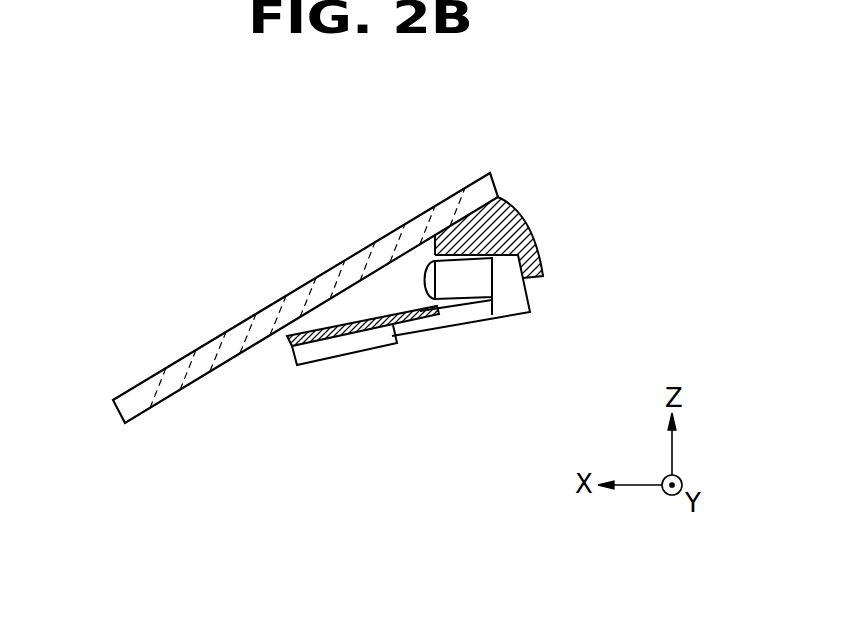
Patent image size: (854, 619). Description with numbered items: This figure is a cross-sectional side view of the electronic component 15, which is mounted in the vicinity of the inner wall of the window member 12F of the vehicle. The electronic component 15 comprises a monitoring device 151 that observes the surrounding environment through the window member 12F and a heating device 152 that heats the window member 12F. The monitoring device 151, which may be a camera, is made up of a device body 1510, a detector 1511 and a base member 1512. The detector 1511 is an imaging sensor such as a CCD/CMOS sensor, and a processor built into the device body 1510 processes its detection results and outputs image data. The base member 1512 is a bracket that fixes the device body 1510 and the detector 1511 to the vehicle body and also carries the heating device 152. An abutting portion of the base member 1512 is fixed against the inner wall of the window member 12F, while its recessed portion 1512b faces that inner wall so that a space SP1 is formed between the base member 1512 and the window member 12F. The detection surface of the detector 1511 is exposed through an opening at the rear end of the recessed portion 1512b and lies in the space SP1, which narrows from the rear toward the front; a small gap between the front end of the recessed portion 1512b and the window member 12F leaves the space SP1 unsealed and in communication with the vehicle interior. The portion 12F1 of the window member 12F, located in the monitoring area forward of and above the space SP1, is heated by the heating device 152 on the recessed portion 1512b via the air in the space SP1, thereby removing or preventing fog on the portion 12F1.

The window member 12F is at (114, 398).
The portion 12F1 is at (300, 287).
The electronic component 15 is at (397, 457).
The monitoring device 151 is at (622, 247).
The device body 1510 is at (527, 298).
The detector 1511 is at (435, 257).
The base member 1512 is at (531, 226).
The recessed portion 1512b is at (362, 318).
The heating device 152 is at (342, 357).
The space SP1 is at (405, 290).